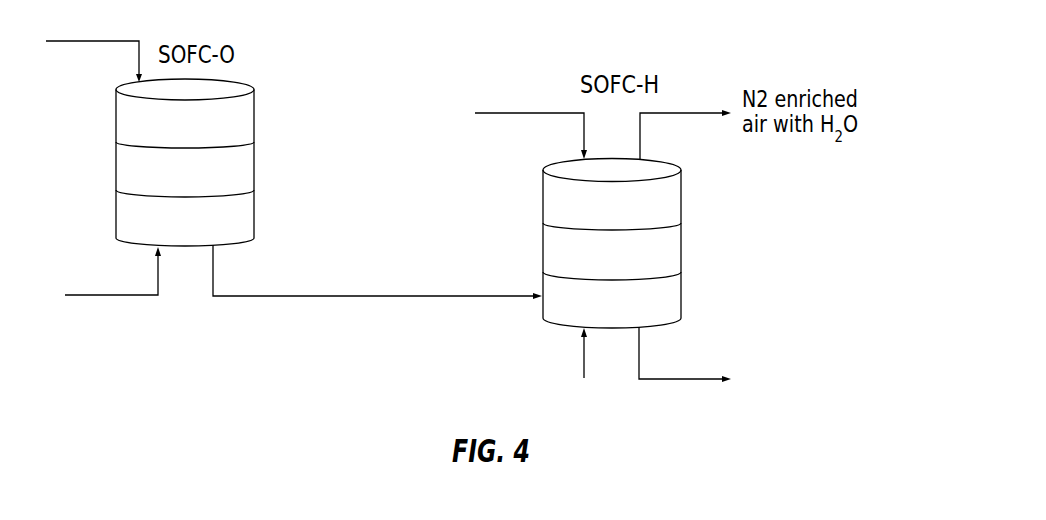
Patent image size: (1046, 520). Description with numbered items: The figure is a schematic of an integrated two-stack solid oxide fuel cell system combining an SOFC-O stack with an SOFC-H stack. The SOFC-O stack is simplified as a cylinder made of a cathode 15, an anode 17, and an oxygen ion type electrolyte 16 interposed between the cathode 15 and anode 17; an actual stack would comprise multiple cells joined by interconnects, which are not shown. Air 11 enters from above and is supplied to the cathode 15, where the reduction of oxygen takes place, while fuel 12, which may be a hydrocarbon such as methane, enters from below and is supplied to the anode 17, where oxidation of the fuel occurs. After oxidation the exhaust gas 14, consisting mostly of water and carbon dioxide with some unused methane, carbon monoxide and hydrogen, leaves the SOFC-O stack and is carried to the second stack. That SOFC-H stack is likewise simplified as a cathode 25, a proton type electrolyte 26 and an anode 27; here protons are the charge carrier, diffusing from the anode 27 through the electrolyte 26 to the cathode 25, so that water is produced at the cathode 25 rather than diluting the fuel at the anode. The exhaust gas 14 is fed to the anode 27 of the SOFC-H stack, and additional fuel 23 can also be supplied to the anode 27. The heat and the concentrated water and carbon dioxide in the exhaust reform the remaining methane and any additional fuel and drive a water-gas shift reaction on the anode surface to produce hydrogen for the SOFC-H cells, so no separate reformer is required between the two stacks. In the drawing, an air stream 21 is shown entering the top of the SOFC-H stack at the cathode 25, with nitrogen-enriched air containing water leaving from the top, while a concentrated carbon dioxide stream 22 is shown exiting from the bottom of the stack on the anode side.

The air 11 is at (95, 41).
The fuel 12 is at (113, 295).
The exhaust gas 14 is at (432, 296).
The cathode 15 is at (257, 113).
The oxygen ion type electrolyte 16 is at (255, 163).
The anode 17 is at (255, 210).
The air feed stream to SOFC-H 21 is at (537, 113).
The concentrated CO2 outlet stream 22 is at (687, 379).
The additional fuel 23 is at (584, 360).
The cathode 25 is at (683, 195).
The proton type electrolyte 26 is at (683, 245).
The anode 27 is at (683, 295).